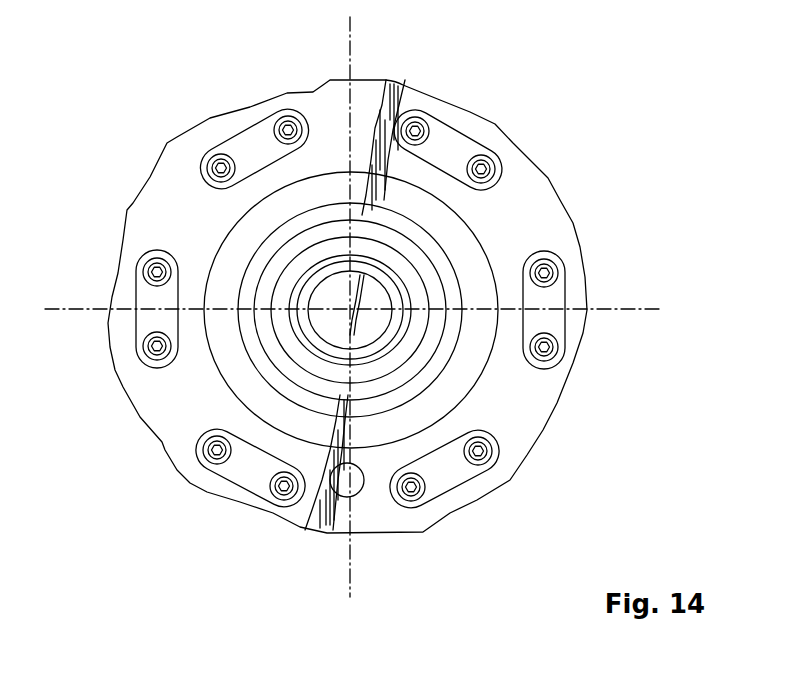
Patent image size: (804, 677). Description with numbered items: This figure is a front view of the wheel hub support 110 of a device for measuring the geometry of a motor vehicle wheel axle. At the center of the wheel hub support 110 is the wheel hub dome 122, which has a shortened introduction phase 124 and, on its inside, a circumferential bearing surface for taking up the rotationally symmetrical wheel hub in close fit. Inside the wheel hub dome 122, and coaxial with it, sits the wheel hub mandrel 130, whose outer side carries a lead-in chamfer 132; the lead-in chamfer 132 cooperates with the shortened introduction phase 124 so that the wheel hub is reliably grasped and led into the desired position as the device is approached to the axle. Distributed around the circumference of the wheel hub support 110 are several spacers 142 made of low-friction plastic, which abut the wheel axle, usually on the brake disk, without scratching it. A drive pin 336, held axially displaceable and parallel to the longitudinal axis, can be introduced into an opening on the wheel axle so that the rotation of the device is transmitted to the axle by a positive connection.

The wheel hub support 110 is at (523, 183).
The wheel hub dome 122 is at (468, 252).
The shortened introduction phase 124 is at (433, 247).
The wheel hub mandrel 130 is at (410, 340).
The lead-in chamfer 132 is at (286, 343).
The spacers 142 is at (250, 142).
The drive pin 336 is at (353, 485).